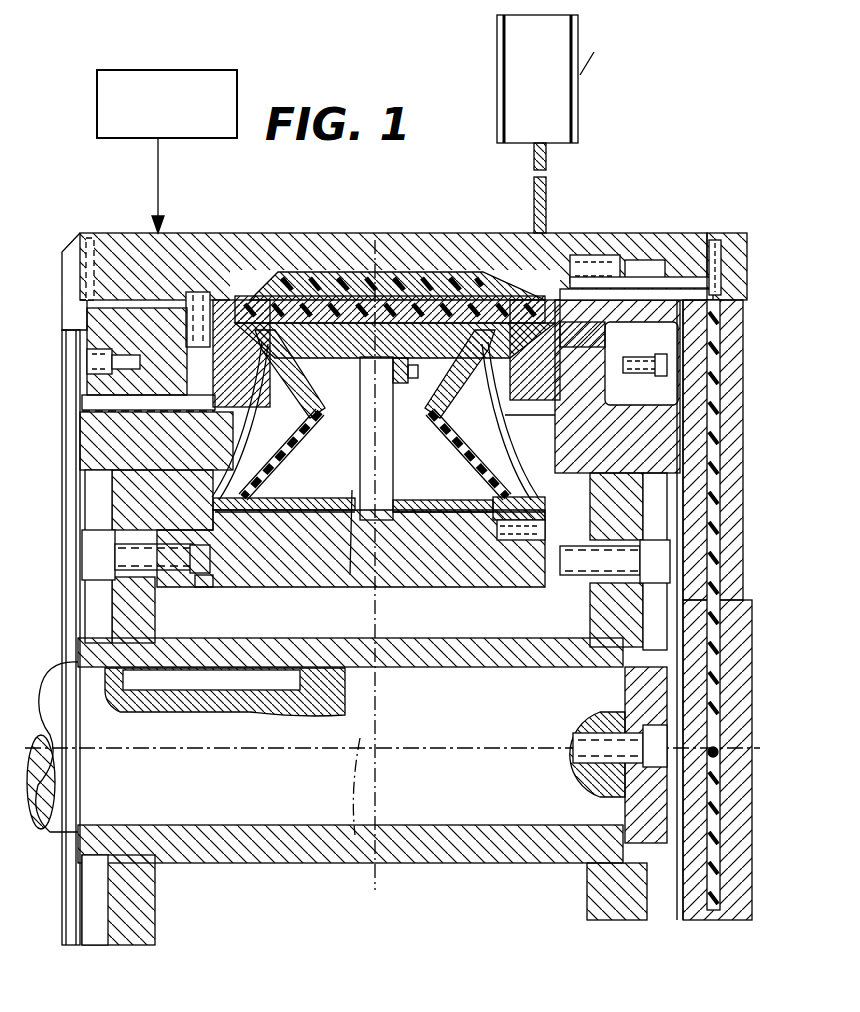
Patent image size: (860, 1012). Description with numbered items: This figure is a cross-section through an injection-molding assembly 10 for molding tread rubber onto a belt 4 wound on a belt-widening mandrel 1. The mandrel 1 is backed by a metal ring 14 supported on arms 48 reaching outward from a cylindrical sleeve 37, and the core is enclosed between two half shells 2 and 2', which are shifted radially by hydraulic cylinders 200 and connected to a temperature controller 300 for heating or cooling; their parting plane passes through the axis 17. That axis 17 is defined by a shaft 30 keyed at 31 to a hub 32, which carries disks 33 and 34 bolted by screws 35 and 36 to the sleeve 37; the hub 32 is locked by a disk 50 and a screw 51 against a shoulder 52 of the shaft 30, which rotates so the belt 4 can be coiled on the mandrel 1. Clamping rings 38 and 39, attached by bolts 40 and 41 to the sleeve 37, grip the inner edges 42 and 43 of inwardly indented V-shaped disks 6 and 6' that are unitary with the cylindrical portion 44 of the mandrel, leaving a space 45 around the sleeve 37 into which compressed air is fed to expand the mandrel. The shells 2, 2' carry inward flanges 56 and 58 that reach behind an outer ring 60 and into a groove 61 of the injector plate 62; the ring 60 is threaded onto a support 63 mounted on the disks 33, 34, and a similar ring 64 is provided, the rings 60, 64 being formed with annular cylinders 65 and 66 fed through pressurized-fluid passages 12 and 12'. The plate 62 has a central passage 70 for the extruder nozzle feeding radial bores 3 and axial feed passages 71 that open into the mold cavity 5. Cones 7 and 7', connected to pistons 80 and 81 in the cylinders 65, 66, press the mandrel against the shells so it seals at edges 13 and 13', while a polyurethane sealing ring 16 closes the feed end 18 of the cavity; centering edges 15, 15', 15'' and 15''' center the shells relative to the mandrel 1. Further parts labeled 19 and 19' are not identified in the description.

The belt-widening mandrel 1 is at (395, 268).
The half shell 2 is at (393, 240).
The half shell 2' is at (298, 566).
The radial bores 3 is at (737, 233).
The belt 4 is at (425, 262).
The mold cavity 5 is at (316, 270).
The V-shaped disk 6 is at (277, 415).
The V-shaped disk 6' is at (448, 379).
The cone 7 is at (58, 267).
The cone 7' is at (470, 422).
The injection-molding assembly 10 is at (725, 420).
The pressurized fluid passage 12 is at (103, 351).
The pressurized fluid passage 12' is at (617, 386).
The sealing edge 13 is at (228, 291).
The sealing edge 13' is at (583, 286).
The metal back-up ring 14 is at (268, 270).
The centering edge 15 is at (82, 235).
The centering edge 15' is at (669, 242).
The centering edge 15'' is at (630, 234).
The centering edge 15''' is at (611, 339).
The sealing ring 16 is at (512, 262).
The axis 17 is at (340, 847).
The feed end of mold cavity 18 is at (695, 236).
The left diaphragm band 19 is at (281, 454).
The right diaphragm band 19' is at (453, 454).
The shaft 30 is at (98, 750).
The key 31 is at (195, 682).
The hub 32 is at (512, 667).
The disk 33 is at (147, 626).
The disk 34 is at (597, 607).
The screw 35 is at (205, 585).
The screw 36 is at (543, 582).
The cylindrical sleeve 37 is at (413, 578).
The clamping ring 38 is at (207, 500).
The clamping ring 39 is at (562, 516).
The bolt 40 is at (288, 575).
The bolt 41 is at (493, 532).
The inner edge 42 is at (328, 580).
The inner edge 43 is at (513, 515).
The cylindrical portion 44 is at (357, 440).
The space 45 is at (350, 575).
The arms 48 is at (382, 565).
The disk 50 is at (630, 863).
The screw 51 is at (580, 770).
The shoulder 52 is at (40, 665).
The flange 56 is at (186, 322).
The flange 58 is at (722, 262).
The outer ring 60 is at (82, 402).
The groove 61 is at (715, 283).
The injector plate 62 is at (720, 480).
The support 63 is at (95, 452).
The ring 64 is at (665, 405).
The annular cylinder 65 is at (87, 362).
The annular cylinder 66 is at (662, 372).
The central passage 70 is at (718, 736).
The axial feed passages 71 is at (713, 300).
The piston 80 is at (100, 415).
The piston 81 is at (527, 425).
The hydraulic cylinders 200 is at (497, 52).
The temperature controller 300 is at (97, 100).